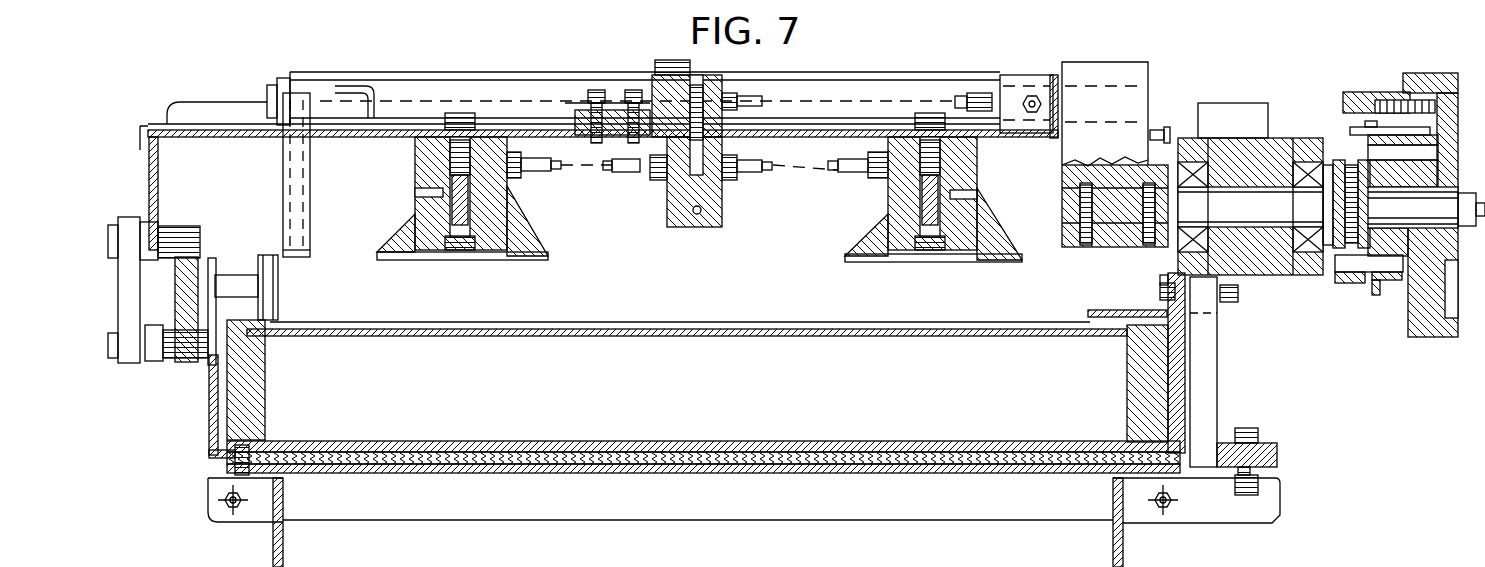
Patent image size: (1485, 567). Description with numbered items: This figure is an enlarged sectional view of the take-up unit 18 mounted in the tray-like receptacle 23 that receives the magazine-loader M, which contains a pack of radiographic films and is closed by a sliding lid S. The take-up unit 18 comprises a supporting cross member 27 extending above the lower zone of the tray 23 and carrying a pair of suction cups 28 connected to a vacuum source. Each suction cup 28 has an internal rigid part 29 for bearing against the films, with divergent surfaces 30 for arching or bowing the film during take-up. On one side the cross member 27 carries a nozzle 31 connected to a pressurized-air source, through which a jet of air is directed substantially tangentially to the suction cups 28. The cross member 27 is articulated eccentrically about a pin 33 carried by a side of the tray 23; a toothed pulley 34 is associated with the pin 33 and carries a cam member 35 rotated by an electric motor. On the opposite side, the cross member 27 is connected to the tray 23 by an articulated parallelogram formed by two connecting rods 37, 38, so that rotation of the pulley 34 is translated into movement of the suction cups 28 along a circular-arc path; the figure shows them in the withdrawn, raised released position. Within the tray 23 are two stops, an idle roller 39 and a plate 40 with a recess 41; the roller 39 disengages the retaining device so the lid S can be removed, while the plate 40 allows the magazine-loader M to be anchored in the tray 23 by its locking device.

The take-up unit 18 is at (1165, 85).
The tray-like receptacle 23 is at (783, 445).
The supporting cross member 27 is at (935, 74).
The suction cups 28 is at (540, 240).
The internal rigid parts 29 is at (502, 251).
The divergent surfaces 30 is at (425, 248).
The nozzle 31 is at (297, 189).
The pin 33 is at (1262, 200).
The toothed pulley 34 is at (1412, 86).
The cam member 35 is at (1345, 100).
The connecting rod 37 is at (130, 297).
The connecting rod 38 is at (190, 275).
The idle roller 39 is at (270, 282).
The plate 40 is at (1160, 332).
The recess 41 is at (1128, 312).
The sliding lid S is at (618, 336).
The magazine-loader M is at (660, 423).